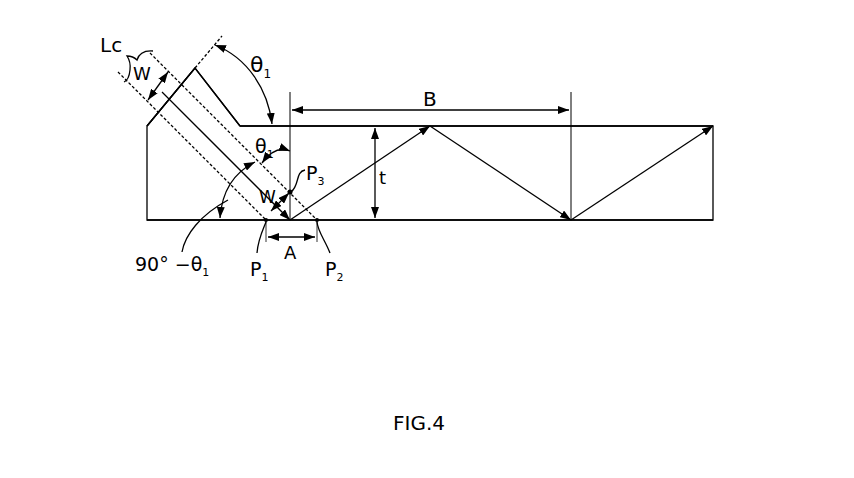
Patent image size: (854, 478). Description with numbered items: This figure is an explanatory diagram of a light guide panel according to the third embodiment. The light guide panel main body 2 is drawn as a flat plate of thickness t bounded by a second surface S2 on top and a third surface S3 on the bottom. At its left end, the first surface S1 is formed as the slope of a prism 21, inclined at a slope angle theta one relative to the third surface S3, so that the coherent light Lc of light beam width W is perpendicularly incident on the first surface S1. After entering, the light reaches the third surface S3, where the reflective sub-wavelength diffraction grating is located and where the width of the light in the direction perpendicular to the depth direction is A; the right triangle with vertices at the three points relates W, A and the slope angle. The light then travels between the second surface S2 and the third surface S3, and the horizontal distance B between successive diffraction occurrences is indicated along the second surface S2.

The light guide panel main body 2 is at (395, 150).
The prism 21 is at (158, 75).
The first surface S1 is at (177, 88).
The second surface S2 is at (614, 126).
The third surface S3 is at (460, 221).